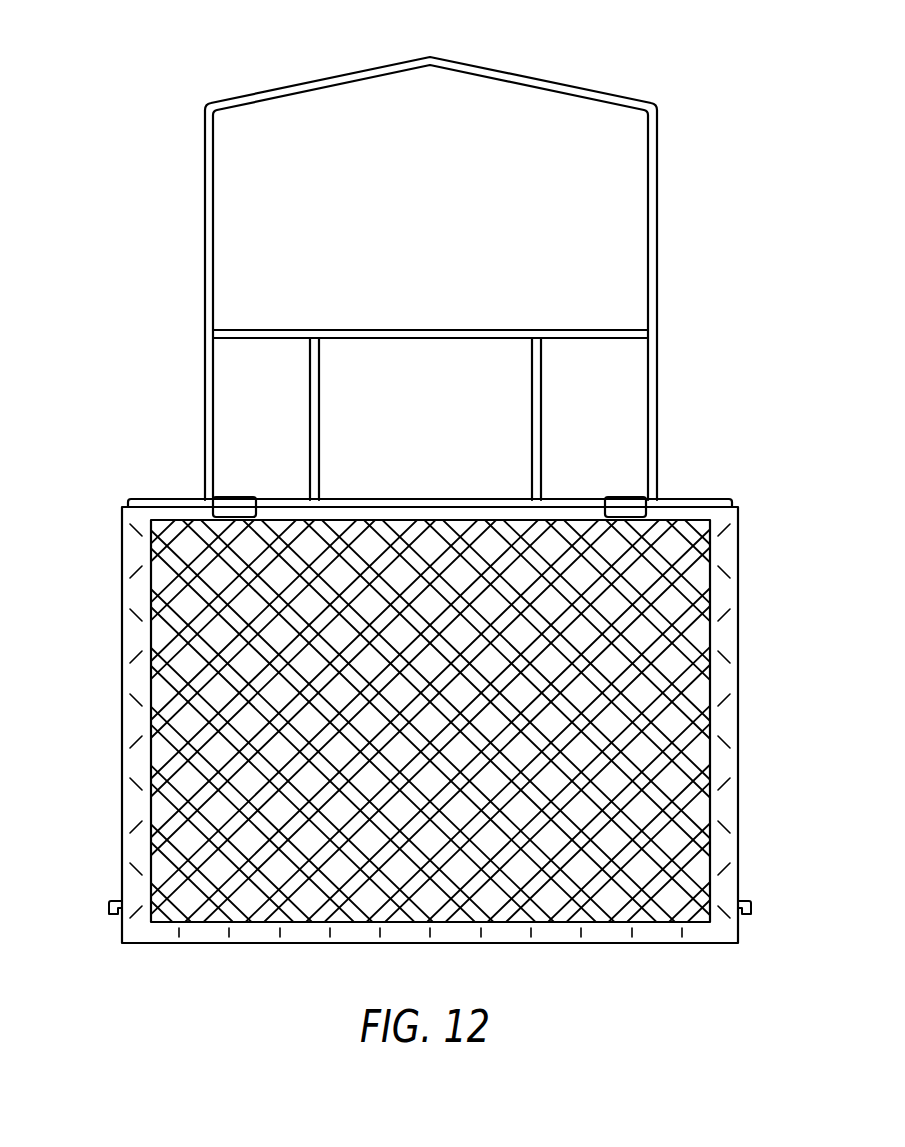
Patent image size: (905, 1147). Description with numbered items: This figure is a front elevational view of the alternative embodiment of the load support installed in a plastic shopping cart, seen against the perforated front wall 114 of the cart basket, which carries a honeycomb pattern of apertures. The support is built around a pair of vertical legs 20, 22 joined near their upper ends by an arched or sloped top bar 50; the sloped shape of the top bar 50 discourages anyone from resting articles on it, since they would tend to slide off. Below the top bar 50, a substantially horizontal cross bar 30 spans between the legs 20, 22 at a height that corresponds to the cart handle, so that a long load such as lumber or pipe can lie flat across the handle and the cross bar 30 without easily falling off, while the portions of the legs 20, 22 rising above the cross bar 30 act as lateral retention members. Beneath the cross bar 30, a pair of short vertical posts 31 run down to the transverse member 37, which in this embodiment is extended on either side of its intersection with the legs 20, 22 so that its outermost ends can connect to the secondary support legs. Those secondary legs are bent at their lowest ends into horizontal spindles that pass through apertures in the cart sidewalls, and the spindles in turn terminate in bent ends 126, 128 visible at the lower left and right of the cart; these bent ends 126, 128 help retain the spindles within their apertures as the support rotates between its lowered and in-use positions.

The vertical leg 20 is at (205, 248).
The vertical leg 22 is at (657, 248).
The top bar 50 is at (532, 77).
The cross bar 30 is at (432, 330).
The support posts 31 is at (532, 420).
The transverse member 37 is at (163, 499).
The front wall 114 is at (262, 828).
The bent end 126 is at (109, 908).
The bent end 128 is at (752, 910).